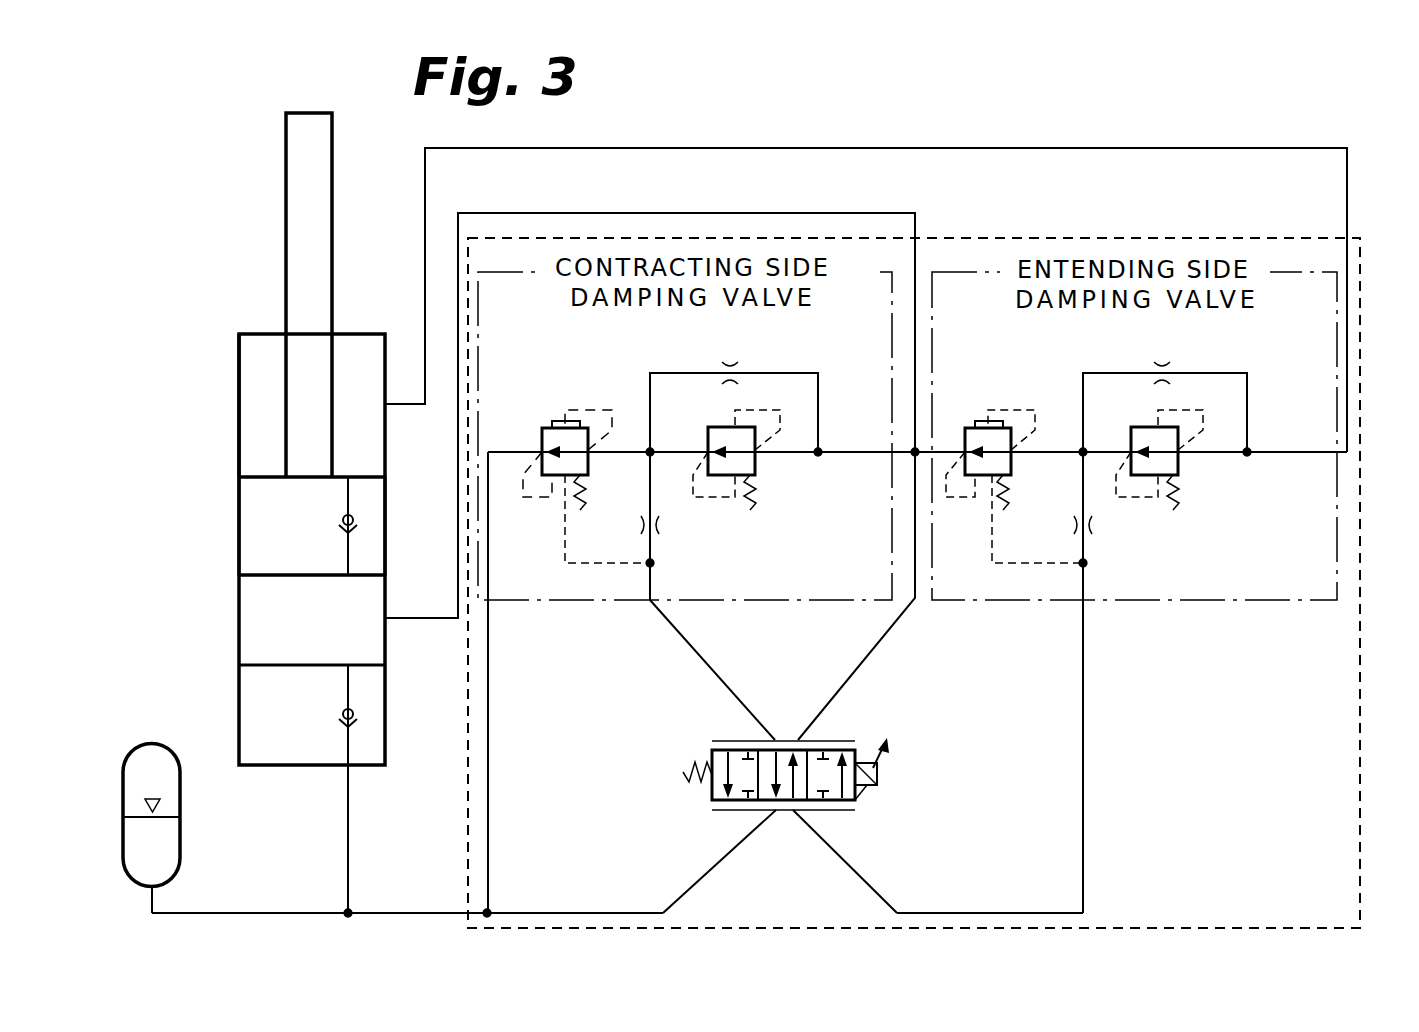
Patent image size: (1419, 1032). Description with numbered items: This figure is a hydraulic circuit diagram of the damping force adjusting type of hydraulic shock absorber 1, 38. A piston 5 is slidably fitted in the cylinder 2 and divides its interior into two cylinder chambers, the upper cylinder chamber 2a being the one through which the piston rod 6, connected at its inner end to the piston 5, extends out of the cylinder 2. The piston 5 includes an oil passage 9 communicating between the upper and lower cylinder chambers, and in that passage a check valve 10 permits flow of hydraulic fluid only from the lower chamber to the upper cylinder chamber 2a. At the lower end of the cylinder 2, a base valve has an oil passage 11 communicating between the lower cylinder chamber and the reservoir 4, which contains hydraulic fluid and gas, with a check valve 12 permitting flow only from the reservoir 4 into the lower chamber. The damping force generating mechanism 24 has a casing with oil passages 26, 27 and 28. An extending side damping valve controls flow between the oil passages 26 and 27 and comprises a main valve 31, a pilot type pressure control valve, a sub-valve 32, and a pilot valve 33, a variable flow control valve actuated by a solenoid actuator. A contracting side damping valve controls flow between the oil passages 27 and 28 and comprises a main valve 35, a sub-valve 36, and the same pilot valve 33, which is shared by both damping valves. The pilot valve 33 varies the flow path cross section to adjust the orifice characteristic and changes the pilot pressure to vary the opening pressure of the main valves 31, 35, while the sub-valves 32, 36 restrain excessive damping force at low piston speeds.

The damping force adjusting type of hydraulic shock absorber 1 is at (1125, 132).
The damping force adjusting type of hydraulic shock absorber 38 is at (1265, 130).
The cylinder 2 is at (239, 350).
The upper cylinder chamber 2a is at (258, 416).
The reservoir 4 is at (160, 778).
The piston 5 is at (255, 532).
The piston rod 6 is at (290, 170).
The oil passage 9 is at (348, 558).
The check valve 10 is at (340, 522).
The oil passage 11 is at (348, 750).
The check valve 12 is at (340, 716).
The damping force generating mechanism 24 is at (1360, 745).
The oil passage 26 is at (672, 147).
The oil passage 27 is at (672, 212).
The oil passage 28 is at (432, 912).
The main valve 31 is at (980, 420).
The sub-valve 32 is at (1181, 478).
The pilot valve 33 is at (877, 772).
The main valve 35 is at (558, 420).
The sub-valve 36 is at (758, 478).